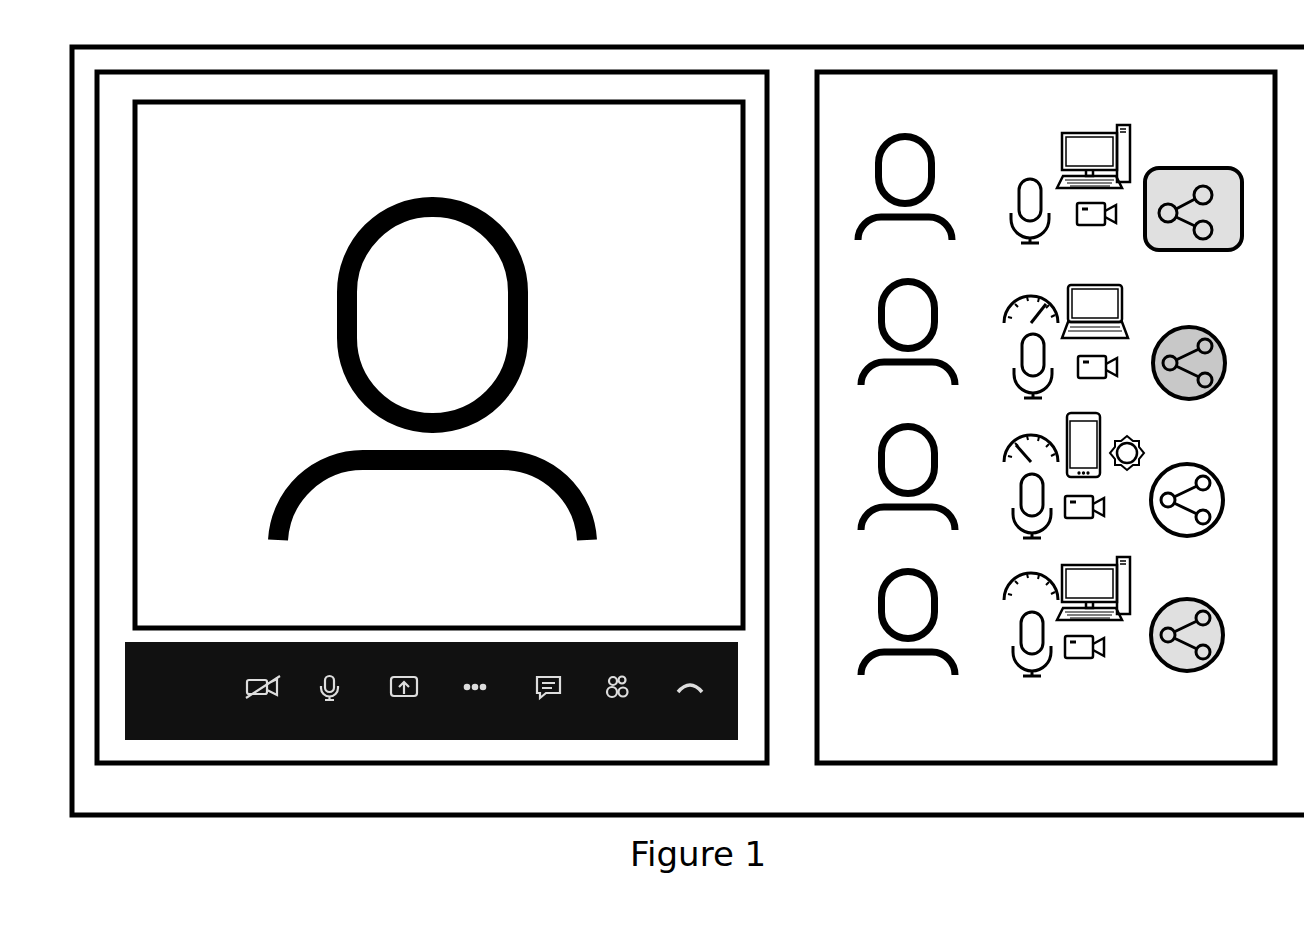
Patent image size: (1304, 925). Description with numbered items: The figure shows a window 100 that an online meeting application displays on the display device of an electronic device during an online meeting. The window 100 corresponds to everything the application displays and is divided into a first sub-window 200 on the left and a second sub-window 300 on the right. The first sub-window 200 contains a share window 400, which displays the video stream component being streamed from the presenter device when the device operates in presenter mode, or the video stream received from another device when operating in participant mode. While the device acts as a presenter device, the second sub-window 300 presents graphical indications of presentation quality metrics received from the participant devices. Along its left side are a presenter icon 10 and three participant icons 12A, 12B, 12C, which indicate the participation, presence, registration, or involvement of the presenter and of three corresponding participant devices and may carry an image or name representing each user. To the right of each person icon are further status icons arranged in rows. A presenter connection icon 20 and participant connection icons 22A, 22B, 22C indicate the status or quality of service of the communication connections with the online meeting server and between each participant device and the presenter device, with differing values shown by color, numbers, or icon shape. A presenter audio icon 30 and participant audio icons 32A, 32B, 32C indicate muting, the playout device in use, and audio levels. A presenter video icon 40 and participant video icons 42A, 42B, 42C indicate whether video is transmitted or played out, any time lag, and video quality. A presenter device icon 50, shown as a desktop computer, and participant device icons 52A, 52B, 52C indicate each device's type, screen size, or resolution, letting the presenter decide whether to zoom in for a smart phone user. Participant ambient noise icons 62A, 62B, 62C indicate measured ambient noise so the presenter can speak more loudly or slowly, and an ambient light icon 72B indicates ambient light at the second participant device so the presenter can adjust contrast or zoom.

The window 100 is at (770, 42).
The first sub-window 200 is at (506, 770).
The second sub-window 300 is at (1090, 768).
The share window 400 is at (567, 96).
The presenter icon 10 is at (905, 128).
The participant icon 12A is at (912, 274).
The participant icon 12B is at (912, 420).
The participant icon 12C is at (912, 565).
The presenter connection icon 20 is at (1185, 164).
The participant connection icon 22A is at (1186, 322).
The participant connection icon 22B is at (1186, 461).
The participant connection icon 22C is at (1186, 596).
The presenter audio icon 30 is at (1030, 248).
The participant audio icon 32A is at (1030, 398).
The participant audio icon 32B is at (1030, 540).
The participant audio icon 32C is at (1030, 680).
The presenter video icon 40 is at (1086, 232).
The participant video icon 42A is at (1086, 384).
The participant video icon 42B is at (1079, 524).
The participant video icon 42C is at (1079, 668).
The presenter device icon 50 is at (1093, 128).
The participant device icon 52A is at (1094, 282).
The participant device icon 52B is at (1107, 429).
The participant device icon 52C is at (1134, 575).
The participant ambient noise icon 62A is at (1005, 302).
The participant ambient noise icon 62B is at (1005, 434).
The participant ambient noise icon 62C is at (1005, 574).
The ambient light icon 72B is at (1146, 448).